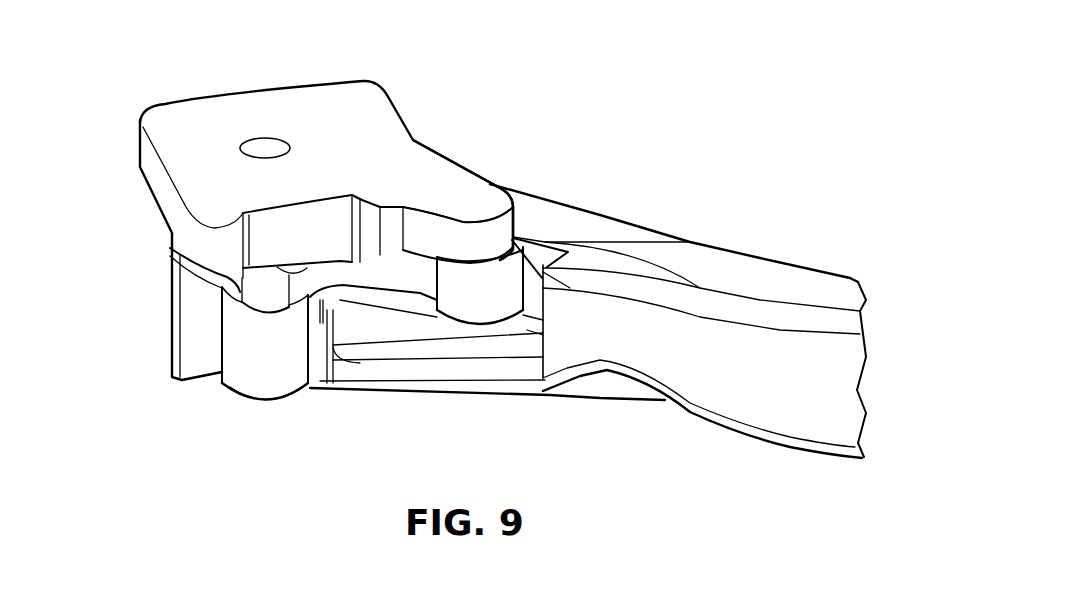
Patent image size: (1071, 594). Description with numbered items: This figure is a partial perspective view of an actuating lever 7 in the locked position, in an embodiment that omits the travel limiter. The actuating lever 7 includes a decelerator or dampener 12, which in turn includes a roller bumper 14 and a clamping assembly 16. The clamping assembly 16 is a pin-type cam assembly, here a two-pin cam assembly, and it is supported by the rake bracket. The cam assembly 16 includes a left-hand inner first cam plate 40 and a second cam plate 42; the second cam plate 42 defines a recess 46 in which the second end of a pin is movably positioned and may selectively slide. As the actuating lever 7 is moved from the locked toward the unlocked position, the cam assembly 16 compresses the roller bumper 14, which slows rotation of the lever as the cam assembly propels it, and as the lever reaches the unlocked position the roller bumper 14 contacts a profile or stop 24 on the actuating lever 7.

The actuating lever 7 is at (571, 88).
The decelerator or dampener 12 is at (148, 228).
The roller bumper 14 is at (481, 302).
The clamping assembly 16 is at (471, 190).
The profile or stop 24 is at (338, 340).
The first cam plate 40 is at (267, 298).
The second cam plate 42 is at (138, 140).
The recess 46 is at (313, 265).